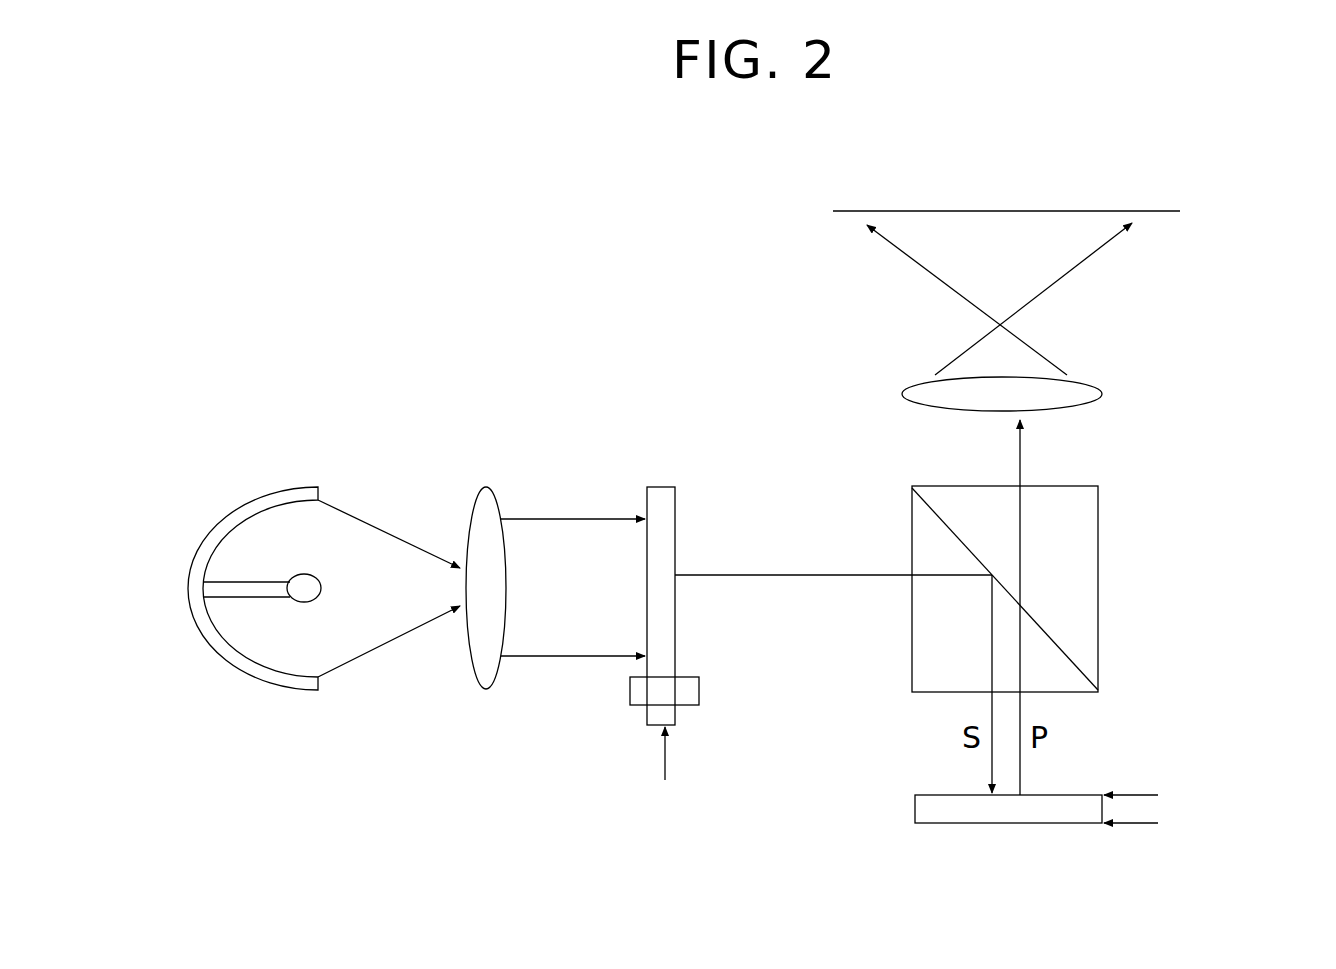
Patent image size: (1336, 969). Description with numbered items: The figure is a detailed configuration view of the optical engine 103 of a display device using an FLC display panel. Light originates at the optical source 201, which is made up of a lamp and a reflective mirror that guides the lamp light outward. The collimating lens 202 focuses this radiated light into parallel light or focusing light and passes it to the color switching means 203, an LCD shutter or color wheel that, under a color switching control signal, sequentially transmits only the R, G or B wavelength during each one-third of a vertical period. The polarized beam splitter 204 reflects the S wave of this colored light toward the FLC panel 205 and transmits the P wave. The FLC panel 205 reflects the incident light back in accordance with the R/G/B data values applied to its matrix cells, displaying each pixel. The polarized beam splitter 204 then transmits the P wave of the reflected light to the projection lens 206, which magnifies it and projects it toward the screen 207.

The optical engine 103 is at (382, 227).
The optical source 201 is at (276, 488).
The collimating lens 202 is at (484, 485).
The color switching means 203 is at (661, 485).
The polarized beam splitter 204 is at (1098, 575).
The FLC panel 205 is at (1020, 823).
The projection lens 206 is at (1102, 395).
The screen 207 is at (1180, 211).